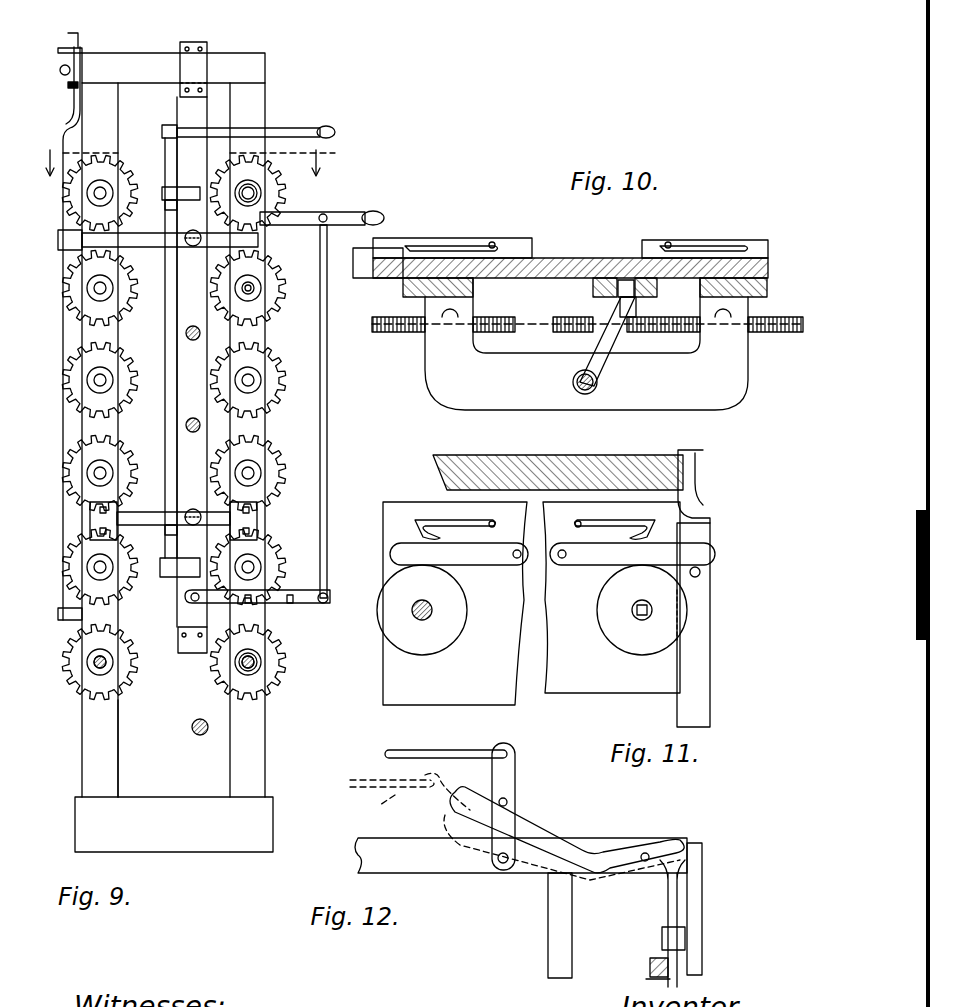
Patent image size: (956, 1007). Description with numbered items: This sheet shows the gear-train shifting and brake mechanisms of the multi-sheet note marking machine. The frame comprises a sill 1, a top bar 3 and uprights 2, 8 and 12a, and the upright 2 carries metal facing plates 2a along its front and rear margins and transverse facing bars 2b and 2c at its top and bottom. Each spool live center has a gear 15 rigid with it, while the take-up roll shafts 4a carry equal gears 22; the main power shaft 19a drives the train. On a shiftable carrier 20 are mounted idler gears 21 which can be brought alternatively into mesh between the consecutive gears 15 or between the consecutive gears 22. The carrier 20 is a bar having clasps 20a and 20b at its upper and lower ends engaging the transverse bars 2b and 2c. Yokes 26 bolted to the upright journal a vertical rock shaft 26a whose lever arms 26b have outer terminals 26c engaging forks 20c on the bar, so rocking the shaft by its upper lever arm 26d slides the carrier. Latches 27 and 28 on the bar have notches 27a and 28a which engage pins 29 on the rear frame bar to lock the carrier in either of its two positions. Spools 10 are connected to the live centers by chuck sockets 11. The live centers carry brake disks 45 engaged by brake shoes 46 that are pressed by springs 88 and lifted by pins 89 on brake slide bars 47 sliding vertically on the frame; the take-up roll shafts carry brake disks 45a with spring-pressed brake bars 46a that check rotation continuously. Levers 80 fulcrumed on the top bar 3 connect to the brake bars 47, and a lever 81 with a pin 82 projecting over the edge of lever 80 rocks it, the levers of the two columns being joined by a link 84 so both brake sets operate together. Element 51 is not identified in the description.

In FIG. 9, the sill 1 is at (82, 843).
In FIG. 11, the upright 2 is at (497, 695).
In FIG. 9, the facing plate 2a is at (112, 125).
In FIG. 9, the transverse facing bar 2b is at (218, 58).
In FIG. 9, the transverse facing bar 2c is at (135, 706).
In FIG. 12, the top bar 3 is at (418, 866).
In FIG. 9, the take-up roll shaft 4a is at (250, 293).
In FIG. 11, the take-up roll shaft 4a is at (425, 620).
In FIG. 10, the upright 8 is at (570, 258).
In FIG. 9, the spool 10 is at (185, 163).
In FIG. 11, the chuck socket 11 is at (640, 620).
In FIG. 10, the upright 12a is at (768, 285).
In FIG. 9, the gear 15 is at (125, 185).
In FIG. 10, the gear 15 is at (405, 334).
In FIG. 9, the main power shaft 19a is at (194, 734).
In FIG. 9, the carrier 20 is at (200, 110).
In FIG. 10, the carrier 20 is at (592, 293).
In FIG. 9, the clasp 20a is at (192, 62).
In FIG. 9, the clasp 20b is at (193, 652).
In FIG. 9, the fork 20c is at (173, 208).
In FIG. 10, the fork 20c is at (632, 297).
In FIG. 9, the idler gear 21 is at (195, 262).
In FIG. 10, the idler gear 21 is at (565, 334).
In FIG. 9, the gear 22 is at (268, 172).
In FIG. 10, the gear 22 is at (780, 334).
In FIG. 9, the yoke 26 is at (85, 248).
In FIG. 10, the yoke 26 is at (452, 392).
In FIG. 9, the rock shaft 26a is at (172, 357).
In FIG. 10, the rock shaft 26a is at (580, 392).
In FIG. 9, the lever arm 26b is at (190, 193).
In FIG. 10, the lever arm 26b is at (620, 358).
In FIG. 10, the outer terminal 26c is at (640, 305).
In FIG. 9, the lever arm 26d is at (335, 132).
In FIG. 9, the latch 27 is at (340, 215).
In FIG. 9, the notch 27a is at (288, 230).
In FIG. 9, the latch 28 is at (305, 605).
In FIG. 9, the notch 28a is at (248, 600).
In FIG. 9, the pin 29 is at (270, 195).
In FIG. 11, the brake disk 45 is at (688, 606).
In FIG. 11, the brake disk 45a is at (462, 622).
In FIG. 10, the brake shoe 46 is at (460, 240).
In FIG. 11, the brake shoe 46 is at (707, 553).
In FIG. 12, the brake shoe 46 is at (653, 958).
In FIG. 10, the brake bar 46a is at (752, 242).
In FIG. 11, the brake bar 46a is at (445, 556).
In FIG. 9, the brake slide bar 47 is at (75, 103).
In FIG. 10, the brake slide bar 47 is at (395, 268).
In FIG. 11, the brake slide bar 47 is at (693, 667).
In FIG. 12, the brake slide bar 47 is at (665, 908).
In FIG. 12, the leg 51 is at (552, 919).
In FIG. 9, the lever 80 is at (68, 78).
In FIG. 11, the lever 80 is at (700, 480).
In FIG. 12, the lever 80 is at (560, 833).
In FIG. 12, the lever 81 is at (508, 774).
In FIG. 12, the pin 82 is at (510, 803).
In FIG. 12, the link 84 is at (432, 752).
In FIG. 10, the spring 88 is at (432, 246).
In FIG. 11, the spring 88 is at (475, 532).
In FIG. 11, the pin 89 is at (702, 572).